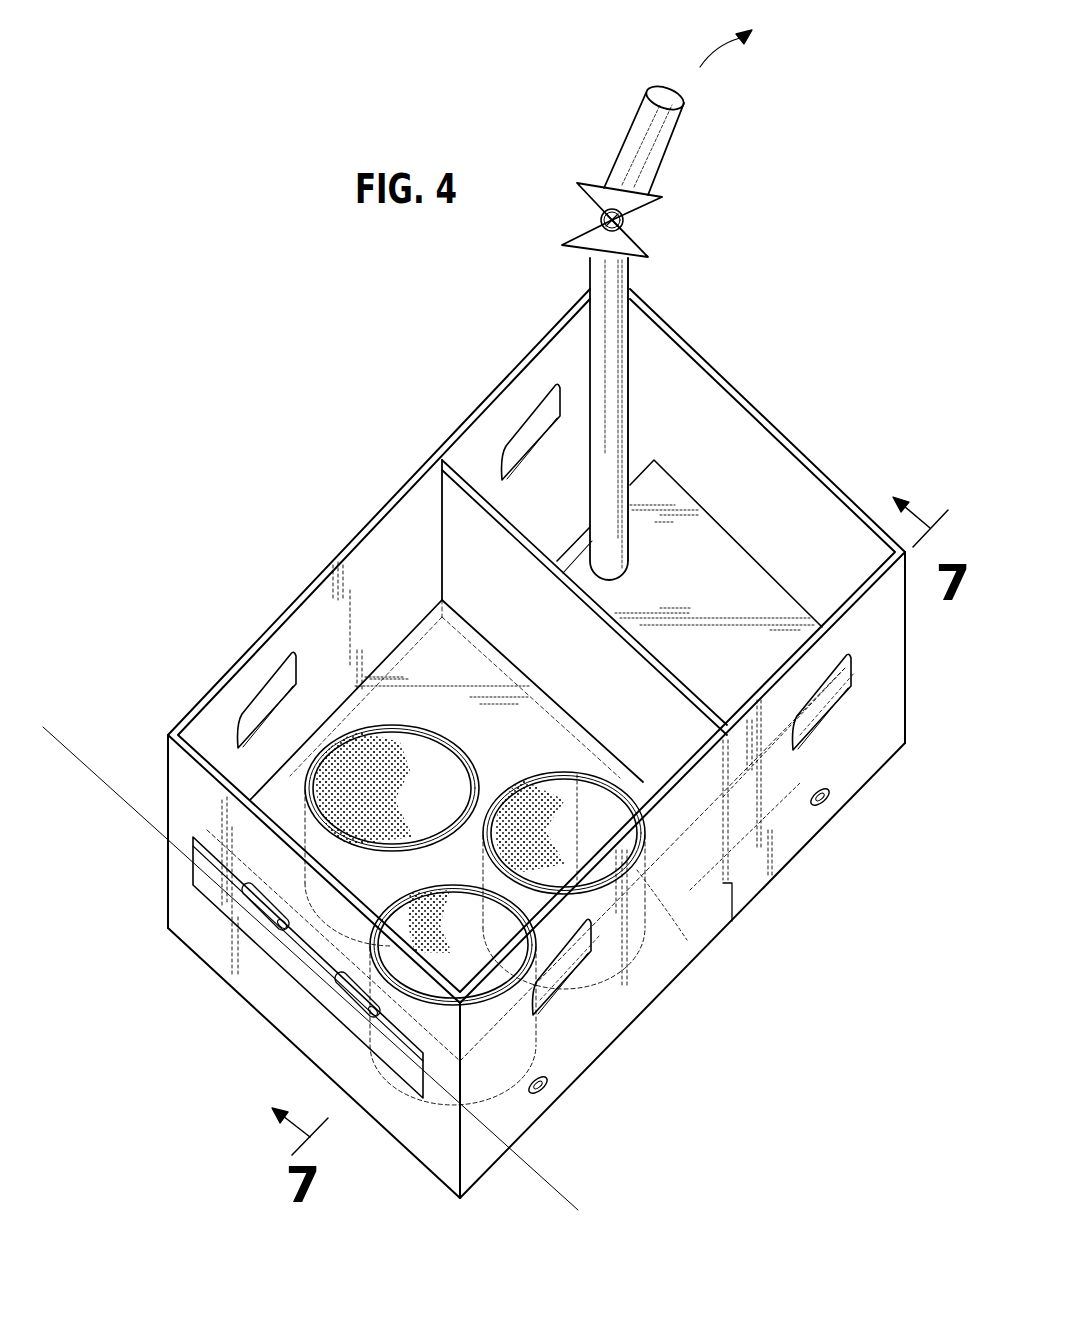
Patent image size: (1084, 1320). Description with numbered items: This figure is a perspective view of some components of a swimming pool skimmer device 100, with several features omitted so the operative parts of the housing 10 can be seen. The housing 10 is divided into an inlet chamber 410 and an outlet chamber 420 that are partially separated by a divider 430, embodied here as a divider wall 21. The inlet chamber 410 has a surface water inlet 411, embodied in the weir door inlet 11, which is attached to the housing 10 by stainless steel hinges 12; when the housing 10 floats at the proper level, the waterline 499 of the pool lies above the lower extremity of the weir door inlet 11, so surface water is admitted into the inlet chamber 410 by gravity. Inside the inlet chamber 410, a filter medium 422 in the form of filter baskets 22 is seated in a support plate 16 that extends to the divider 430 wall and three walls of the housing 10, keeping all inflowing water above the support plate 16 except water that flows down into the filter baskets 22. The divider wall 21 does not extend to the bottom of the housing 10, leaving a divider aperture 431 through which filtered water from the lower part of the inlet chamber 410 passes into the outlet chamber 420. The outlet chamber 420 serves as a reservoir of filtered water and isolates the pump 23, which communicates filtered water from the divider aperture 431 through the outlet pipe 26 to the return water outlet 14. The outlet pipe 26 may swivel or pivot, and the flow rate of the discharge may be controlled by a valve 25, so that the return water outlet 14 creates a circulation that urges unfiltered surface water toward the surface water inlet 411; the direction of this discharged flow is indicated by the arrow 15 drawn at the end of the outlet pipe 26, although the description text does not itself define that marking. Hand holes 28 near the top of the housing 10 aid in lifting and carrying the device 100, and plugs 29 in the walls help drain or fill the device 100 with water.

The device 100 is at (291, 474).
The housing 10 is at (256, 644).
The inlet chamber 410 is at (296, 571).
The outlet chamber 420 is at (738, 452).
The divider 430 is at (455, 565).
The filter medium 422 is at (416, 651).
The divider wall 21 is at (465, 470).
The pump 23 is at (686, 583).
The divider aperture 431 is at (734, 900).
The support plate 16 is at (693, 837).
The surface water inlet 411 is at (172, 877).
The weir door inlet 11 is at (293, 975).
The hinges 12 is at (263, 908).
The outlet pipe 26 is at (628, 158).
The return water outlet 14 is at (680, 103).
The flow direction 15 is at (714, 60).
The valve 25 is at (658, 229).
The filters 22 is at (436, 790).
The hand holes 28 is at (528, 432).
The plugs 29 is at (826, 806).
The waterline 499 is at (105, 778).